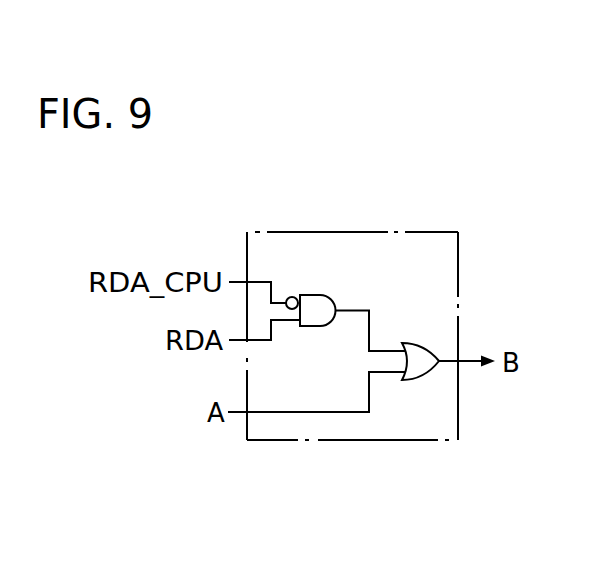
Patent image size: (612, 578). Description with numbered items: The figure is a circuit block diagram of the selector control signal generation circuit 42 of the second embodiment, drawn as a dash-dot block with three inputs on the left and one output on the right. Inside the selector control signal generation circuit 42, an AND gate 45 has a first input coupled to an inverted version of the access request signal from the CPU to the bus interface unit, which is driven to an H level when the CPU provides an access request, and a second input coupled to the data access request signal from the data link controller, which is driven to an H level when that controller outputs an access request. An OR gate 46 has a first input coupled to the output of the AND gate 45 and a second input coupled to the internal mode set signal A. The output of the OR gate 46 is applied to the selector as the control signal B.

The selector control signal generation circuit 42 is at (413, 232).
The AND gate 45 is at (310, 296).
The OR gate 46 is at (418, 343).